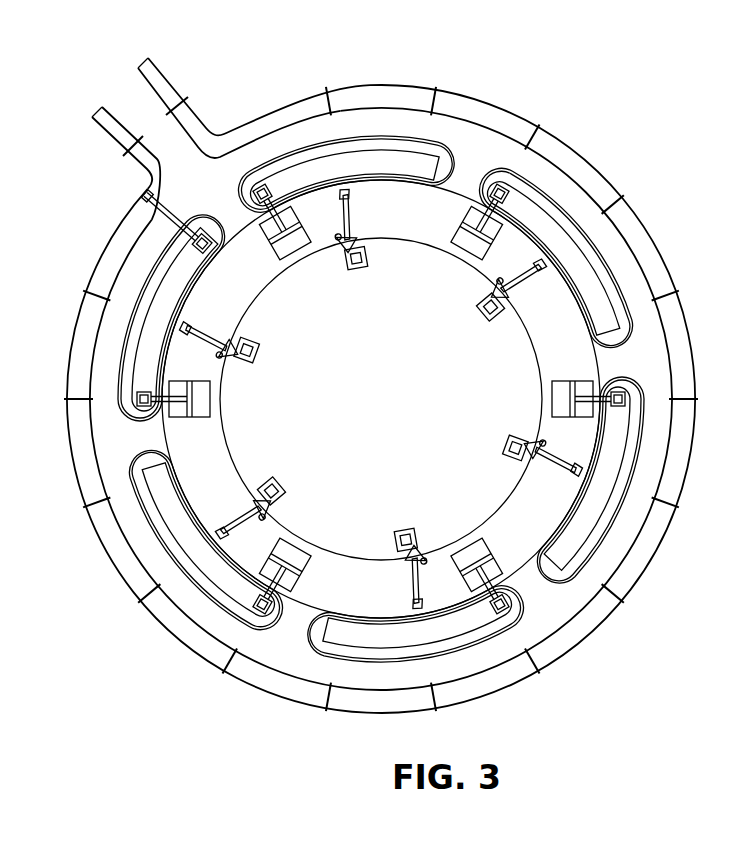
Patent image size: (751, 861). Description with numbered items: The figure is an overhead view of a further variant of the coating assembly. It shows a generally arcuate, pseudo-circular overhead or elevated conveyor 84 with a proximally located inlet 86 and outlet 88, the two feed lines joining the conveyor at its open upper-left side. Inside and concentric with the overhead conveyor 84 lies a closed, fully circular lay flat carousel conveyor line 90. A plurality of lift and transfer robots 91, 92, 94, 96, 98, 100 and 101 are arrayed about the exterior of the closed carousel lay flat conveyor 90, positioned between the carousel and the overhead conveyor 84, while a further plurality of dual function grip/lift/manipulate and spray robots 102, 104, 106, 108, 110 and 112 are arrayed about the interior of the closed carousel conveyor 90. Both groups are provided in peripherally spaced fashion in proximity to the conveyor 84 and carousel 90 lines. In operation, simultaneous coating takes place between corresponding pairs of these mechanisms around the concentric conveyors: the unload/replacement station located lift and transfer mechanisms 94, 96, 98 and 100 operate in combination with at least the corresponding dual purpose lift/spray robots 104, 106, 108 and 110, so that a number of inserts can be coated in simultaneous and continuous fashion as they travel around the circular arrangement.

The overhead conveyor 84 is at (667, 239).
The inlet 86 is at (119, 88).
The outlet 88 is at (180, 75).
The lay flat conveyor line 90 is at (225, 467).
The lift and transfer robot 91 is at (203, 236).
The lift and transfer robot 92 is at (136, 402).
The lift and transfer robot 94 is at (262, 612).
The lift and transfer robot 96 is at (504, 610).
The lift and transfer robot 98 is at (626, 400).
The lift and transfer robot 100 is at (503, 190).
The lift and transfer robot 101 is at (264, 190).
The dual function robot 102 is at (250, 356).
The dual function robot 104 is at (278, 489).
The dual function robot 106 is at (410, 537).
The dual function robot 108 is at (508, 442).
The dual function robot 110 is at (487, 312).
The dual function robot 112 is at (356, 270).